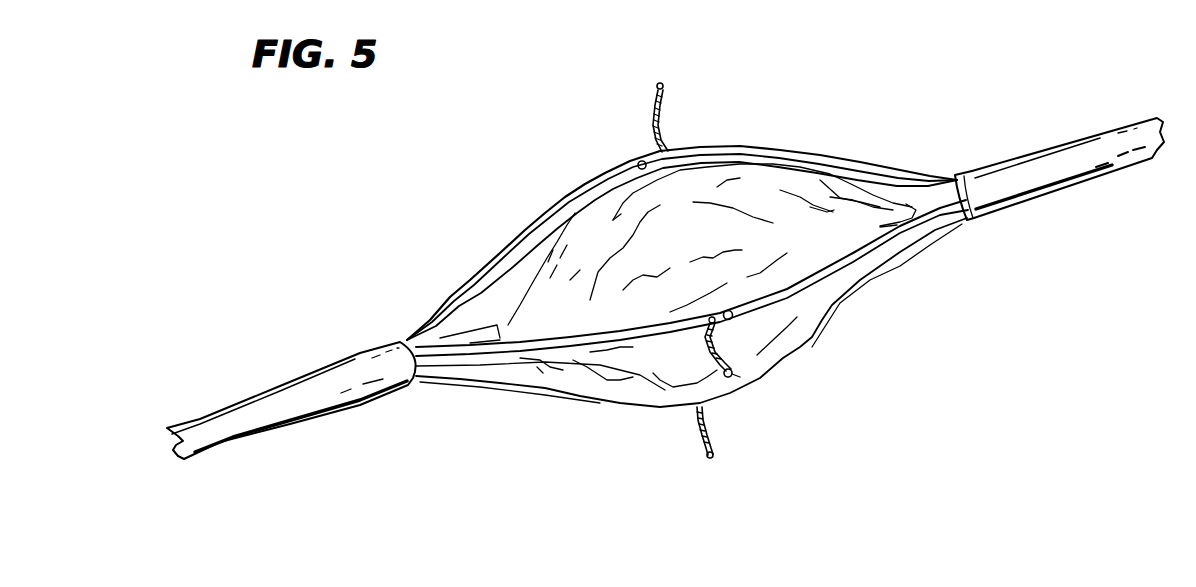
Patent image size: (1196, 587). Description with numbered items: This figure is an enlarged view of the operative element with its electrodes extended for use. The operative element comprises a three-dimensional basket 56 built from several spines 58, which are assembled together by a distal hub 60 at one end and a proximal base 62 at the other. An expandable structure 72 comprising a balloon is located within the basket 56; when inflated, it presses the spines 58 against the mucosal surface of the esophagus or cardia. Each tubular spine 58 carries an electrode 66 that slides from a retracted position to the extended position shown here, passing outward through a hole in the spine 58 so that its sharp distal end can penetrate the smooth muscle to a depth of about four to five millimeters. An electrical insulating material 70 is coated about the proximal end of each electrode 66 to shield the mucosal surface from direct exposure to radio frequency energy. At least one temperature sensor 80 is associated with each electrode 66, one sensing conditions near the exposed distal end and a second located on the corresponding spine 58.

The three-dimensional basket 56 is at (877, 167).
The spine 58 is at (586, 237).
The distal hub 60 is at (390, 395).
The proximal base 62 is at (1036, 187).
The electrode 66 is at (663, 112).
The electrical insulating material 70 is at (664, 143).
The expandable structure 72 is at (773, 203).
The temperature sensor 80 is at (655, 90).